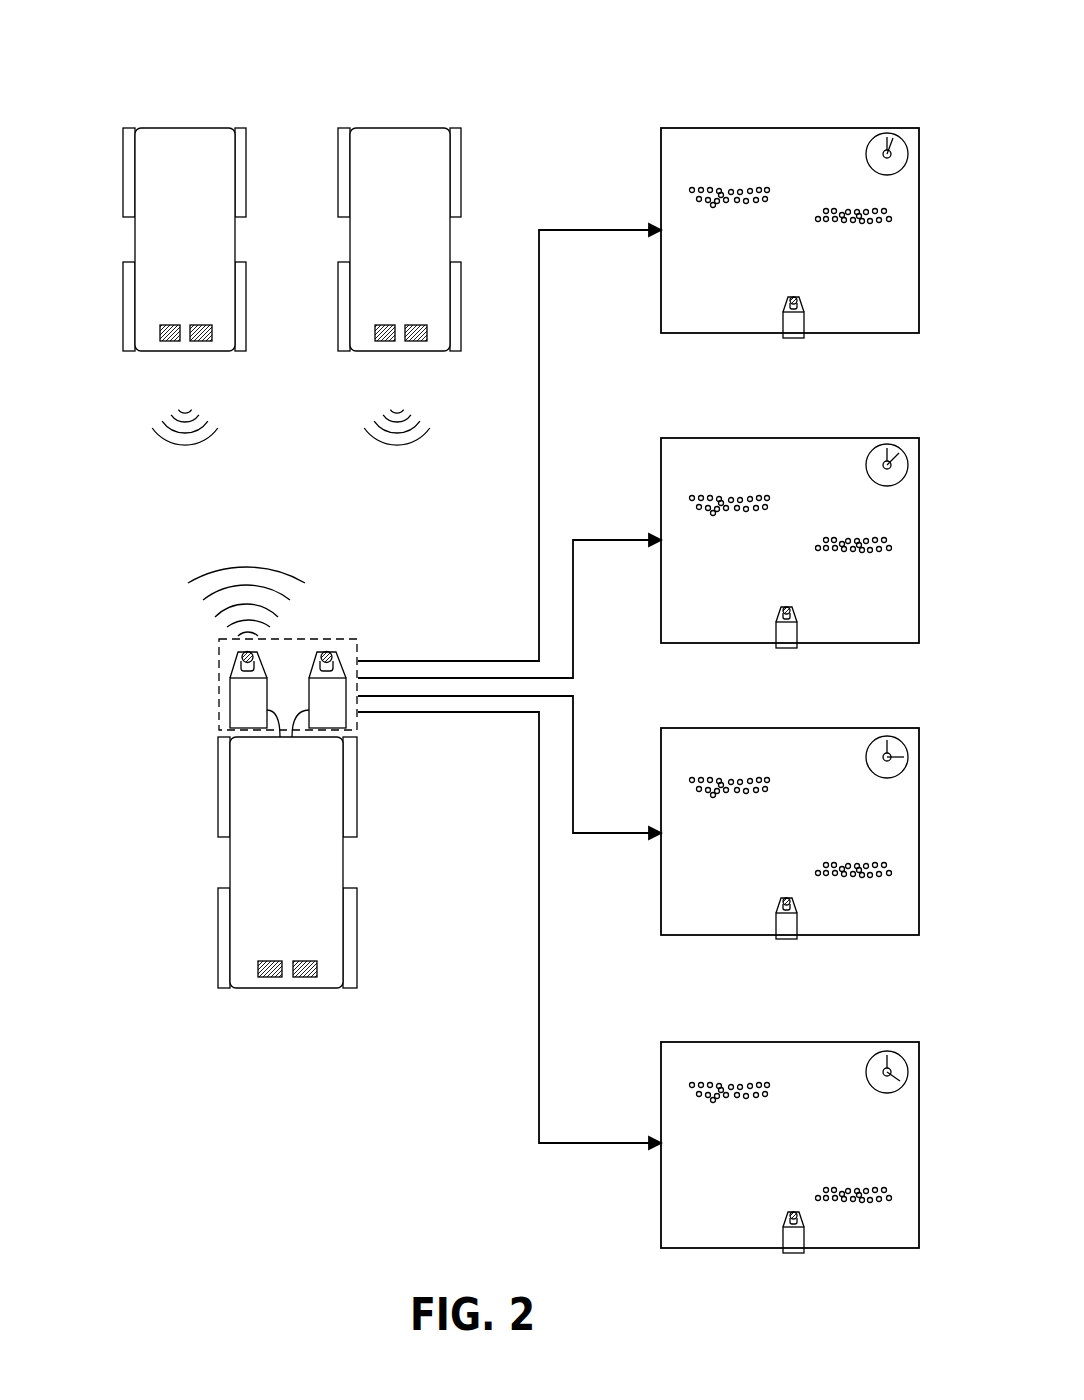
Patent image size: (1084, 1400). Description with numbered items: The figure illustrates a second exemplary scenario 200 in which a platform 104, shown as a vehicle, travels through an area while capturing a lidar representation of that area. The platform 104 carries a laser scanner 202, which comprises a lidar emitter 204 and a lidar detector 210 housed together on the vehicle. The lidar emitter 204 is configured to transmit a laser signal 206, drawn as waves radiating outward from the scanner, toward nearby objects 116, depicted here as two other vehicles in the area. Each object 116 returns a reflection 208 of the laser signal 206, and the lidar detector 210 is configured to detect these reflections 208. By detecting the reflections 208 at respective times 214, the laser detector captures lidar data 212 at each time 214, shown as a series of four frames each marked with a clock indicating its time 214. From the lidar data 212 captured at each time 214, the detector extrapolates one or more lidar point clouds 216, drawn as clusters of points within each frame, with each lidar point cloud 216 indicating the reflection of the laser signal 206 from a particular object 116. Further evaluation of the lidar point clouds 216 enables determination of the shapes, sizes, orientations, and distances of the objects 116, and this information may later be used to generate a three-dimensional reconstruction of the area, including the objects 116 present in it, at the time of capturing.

The second exemplary scenario 200 is at (851, 42).
The object 116 is at (148, 128).
The reflection 208 is at (165, 433).
The laser signal 206 is at (205, 578).
The laser scanner 202 is at (219, 708).
The lidar emitter 204 is at (235, 668).
The lidar detector 210 is at (338, 665).
The platform 104 is at (218, 780).
The lidar data 212 is at (740, 127).
The time 214 is at (887, 133).
The lidar point cloud 216 is at (750, 187).